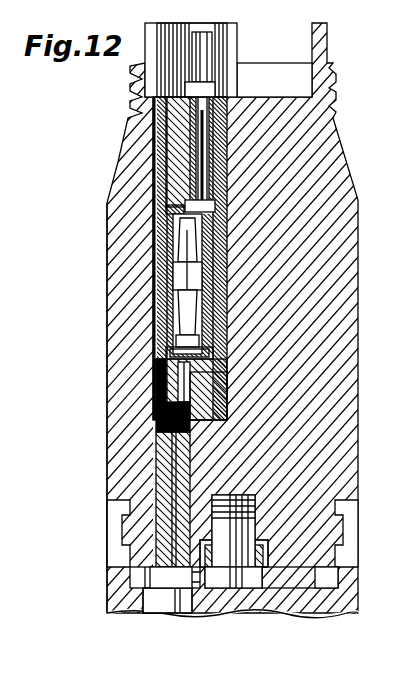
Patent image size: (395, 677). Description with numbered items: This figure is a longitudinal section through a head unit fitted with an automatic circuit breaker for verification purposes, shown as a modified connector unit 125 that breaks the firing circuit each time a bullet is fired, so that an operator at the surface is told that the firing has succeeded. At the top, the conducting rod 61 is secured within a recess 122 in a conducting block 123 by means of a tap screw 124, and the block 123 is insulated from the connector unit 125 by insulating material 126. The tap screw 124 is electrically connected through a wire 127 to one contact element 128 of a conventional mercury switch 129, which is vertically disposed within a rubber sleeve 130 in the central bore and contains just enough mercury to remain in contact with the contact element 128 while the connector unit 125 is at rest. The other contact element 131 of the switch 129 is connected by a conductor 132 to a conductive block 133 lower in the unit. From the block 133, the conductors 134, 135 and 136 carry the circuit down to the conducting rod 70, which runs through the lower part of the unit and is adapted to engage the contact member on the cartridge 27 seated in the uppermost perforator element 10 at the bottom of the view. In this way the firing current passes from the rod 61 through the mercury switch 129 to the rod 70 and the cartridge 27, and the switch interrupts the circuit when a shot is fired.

The perforator element 10 is at (262, 605).
The cartridge 27 is at (158, 605).
The conducting rod 61 is at (140, 115).
The conducting rod 70 is at (152, 468).
The recess 122 is at (196, 133).
The conducting block 123 is at (140, 100).
The tap screw 124 is at (165, 165).
The connector unit 125 is at (120, 227).
The insulating material 126 is at (170, 180).
The wire 127 is at (155, 248).
The contact element 128 is at (160, 268).
The mercury switch 129 is at (165, 282).
The rubber sleeve 130 is at (160, 335).
The contact element 131 is at (158, 312).
The conductor 132 is at (160, 345).
The conductive block 133 is at (158, 365).
The conductor 134 is at (158, 388).
The conductor 135 is at (158, 410).
The conductor 136 is at (158, 425).